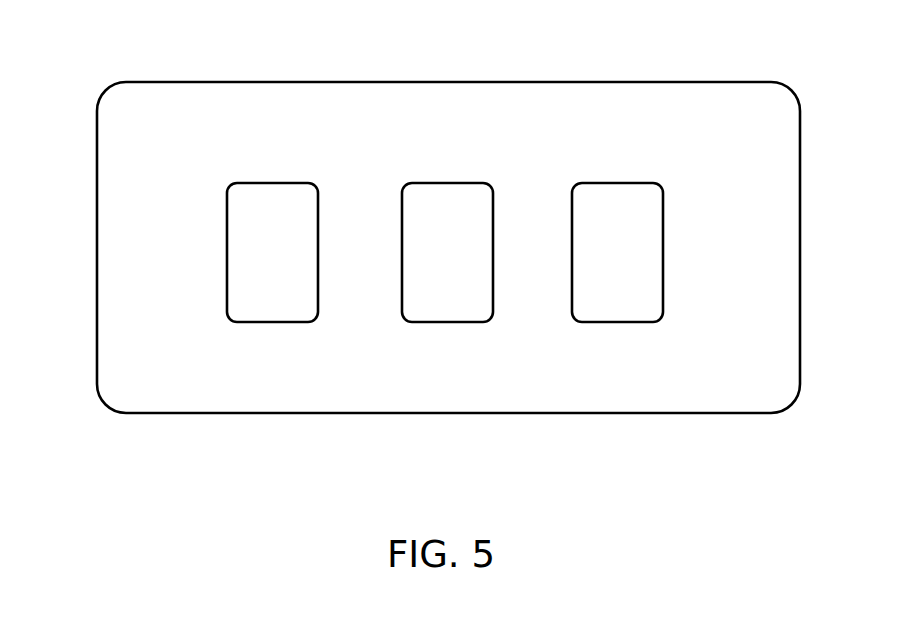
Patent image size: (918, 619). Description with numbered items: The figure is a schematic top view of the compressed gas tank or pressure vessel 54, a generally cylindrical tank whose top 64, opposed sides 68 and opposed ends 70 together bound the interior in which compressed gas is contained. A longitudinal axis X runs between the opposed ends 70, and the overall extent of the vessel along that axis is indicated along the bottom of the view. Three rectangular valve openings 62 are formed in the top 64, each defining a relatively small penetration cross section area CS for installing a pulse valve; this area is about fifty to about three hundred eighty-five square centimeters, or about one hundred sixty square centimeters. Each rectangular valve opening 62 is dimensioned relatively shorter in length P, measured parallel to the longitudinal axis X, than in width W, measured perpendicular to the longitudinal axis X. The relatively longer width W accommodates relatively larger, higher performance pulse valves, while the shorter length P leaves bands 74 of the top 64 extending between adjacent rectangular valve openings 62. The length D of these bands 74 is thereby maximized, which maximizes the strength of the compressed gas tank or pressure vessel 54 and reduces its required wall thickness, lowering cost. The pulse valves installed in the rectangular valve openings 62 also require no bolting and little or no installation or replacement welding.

The compressed gas tank or pressure vessel 54 is at (442, 249).
The rectangular valve opening 62 is at (274, 183).
The top 64 is at (442, 249).
The opposed sides 68 is at (560, 82).
The opposed ends 70 is at (97, 229).
The bands 74 is at (353, 290).
The penetration cross section area CS is at (300, 220).
The width W is at (228, 183).
The length of bands D is at (318, 183).
The length P is at (318, 322).
The longitudinal axis X is at (97, 413).